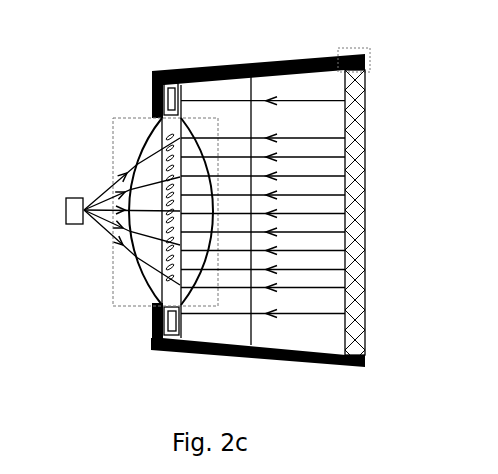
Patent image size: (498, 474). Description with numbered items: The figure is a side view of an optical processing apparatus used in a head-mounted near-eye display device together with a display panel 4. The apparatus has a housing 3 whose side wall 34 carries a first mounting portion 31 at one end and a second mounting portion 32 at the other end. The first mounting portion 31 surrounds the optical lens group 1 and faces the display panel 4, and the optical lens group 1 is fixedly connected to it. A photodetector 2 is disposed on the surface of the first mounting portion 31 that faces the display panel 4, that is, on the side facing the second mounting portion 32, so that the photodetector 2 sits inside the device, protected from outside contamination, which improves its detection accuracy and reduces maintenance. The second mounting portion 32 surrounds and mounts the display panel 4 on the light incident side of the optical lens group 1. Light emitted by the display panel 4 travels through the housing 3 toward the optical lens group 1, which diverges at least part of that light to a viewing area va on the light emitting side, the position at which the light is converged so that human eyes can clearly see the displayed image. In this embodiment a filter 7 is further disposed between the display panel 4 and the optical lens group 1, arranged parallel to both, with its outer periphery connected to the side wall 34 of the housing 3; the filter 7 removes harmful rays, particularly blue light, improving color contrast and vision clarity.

The optical lens group 1 is at (113, 127).
The photodetector 2 is at (167, 86).
The housing 3 is at (239, 213).
The first mounting portion 31 is at (152, 90).
The second mounting portion 32 is at (353, 48).
The side wall 34 is at (263, 360).
The display panel 4 is at (365, 117).
The filter 7 is at (251, 334).
The viewing area va is at (65, 198).